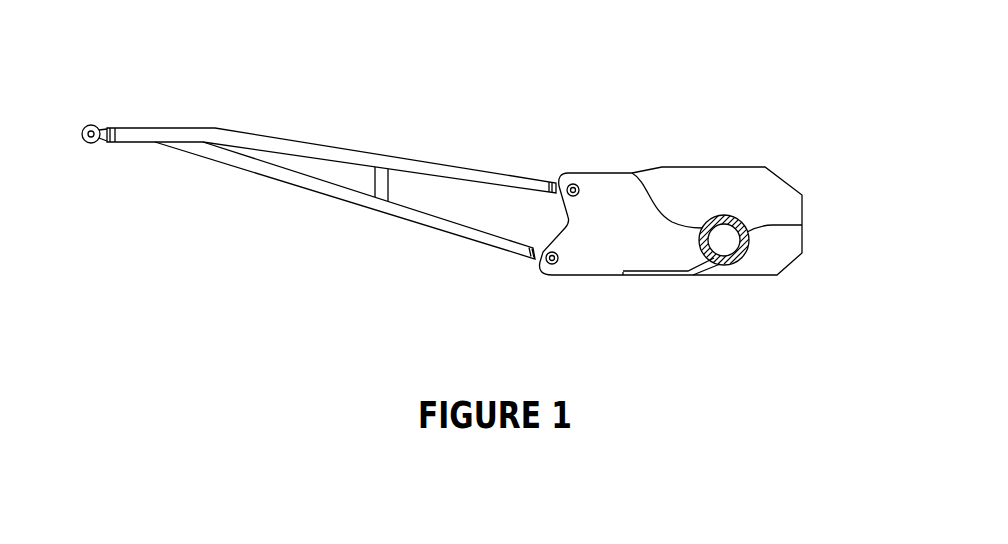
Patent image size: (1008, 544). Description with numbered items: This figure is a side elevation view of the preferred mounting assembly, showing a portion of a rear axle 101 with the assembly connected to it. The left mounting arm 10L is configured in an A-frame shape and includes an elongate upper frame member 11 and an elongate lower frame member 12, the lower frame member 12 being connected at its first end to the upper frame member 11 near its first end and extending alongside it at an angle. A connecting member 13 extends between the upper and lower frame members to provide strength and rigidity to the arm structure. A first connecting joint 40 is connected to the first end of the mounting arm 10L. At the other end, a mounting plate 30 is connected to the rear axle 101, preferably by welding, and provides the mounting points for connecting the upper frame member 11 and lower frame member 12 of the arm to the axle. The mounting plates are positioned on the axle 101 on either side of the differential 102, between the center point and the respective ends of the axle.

The left mounting arm 10L is at (367, 125).
The upper frame member 11 is at (310, 148).
The lower frame member 12 is at (278, 175).
The connecting member 13 is at (387, 177).
The first connecting joint 40 is at (90, 145).
The mounting plate 30 is at (580, 275).
The rear axle 101 is at (800, 223).
The differential 102 is at (728, 187).